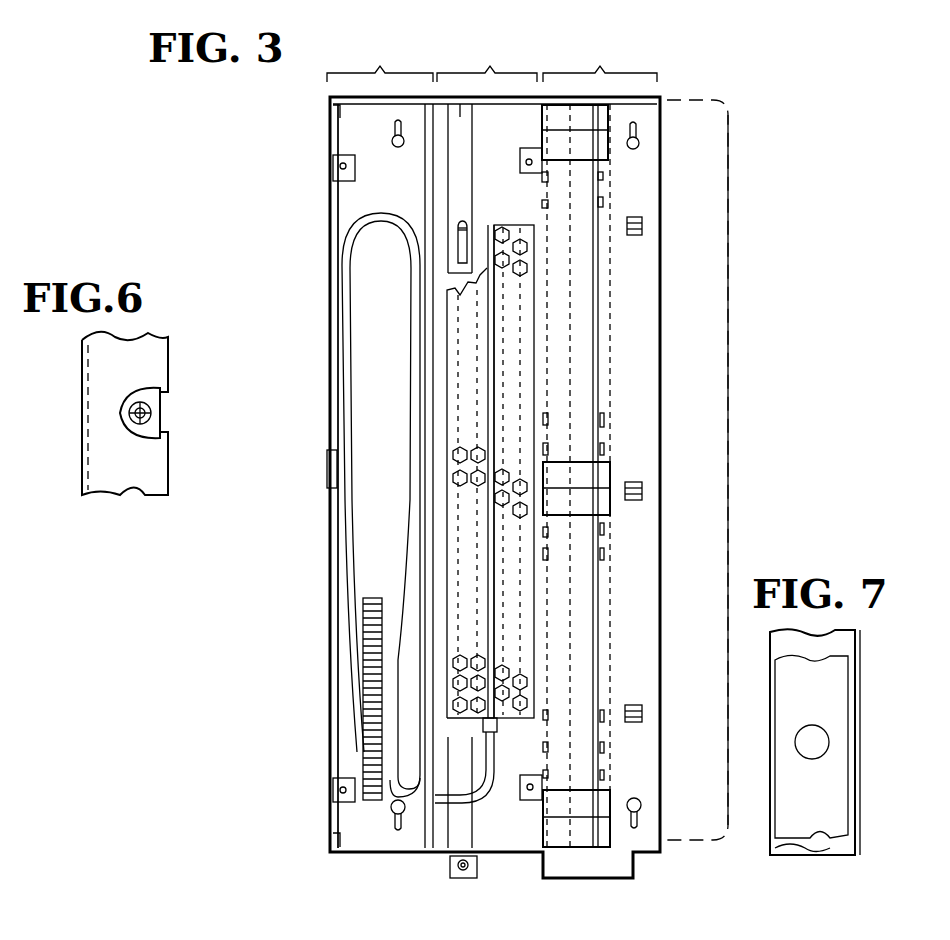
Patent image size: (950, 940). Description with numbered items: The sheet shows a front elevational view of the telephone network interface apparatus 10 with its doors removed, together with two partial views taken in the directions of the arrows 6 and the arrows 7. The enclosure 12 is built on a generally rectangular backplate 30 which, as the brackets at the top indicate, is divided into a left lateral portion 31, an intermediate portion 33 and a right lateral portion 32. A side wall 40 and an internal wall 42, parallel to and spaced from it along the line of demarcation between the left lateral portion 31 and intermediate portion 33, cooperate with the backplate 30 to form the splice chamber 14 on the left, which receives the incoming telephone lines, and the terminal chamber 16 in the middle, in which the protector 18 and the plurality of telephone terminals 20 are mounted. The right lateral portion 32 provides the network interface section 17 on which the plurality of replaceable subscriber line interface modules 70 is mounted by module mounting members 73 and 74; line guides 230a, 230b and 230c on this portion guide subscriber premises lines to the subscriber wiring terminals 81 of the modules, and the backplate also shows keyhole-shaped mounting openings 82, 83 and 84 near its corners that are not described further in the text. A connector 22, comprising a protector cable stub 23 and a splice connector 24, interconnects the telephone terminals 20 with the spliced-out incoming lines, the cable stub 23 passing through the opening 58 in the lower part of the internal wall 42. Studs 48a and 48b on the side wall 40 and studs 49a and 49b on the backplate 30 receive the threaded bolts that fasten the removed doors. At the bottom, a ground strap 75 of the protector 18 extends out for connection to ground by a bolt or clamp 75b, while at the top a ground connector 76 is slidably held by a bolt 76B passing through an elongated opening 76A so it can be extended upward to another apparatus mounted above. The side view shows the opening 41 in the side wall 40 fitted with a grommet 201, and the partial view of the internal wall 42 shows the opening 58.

In FIG. 3, the telephone network interface apparatus 10 is at (303, 113).
In FIG. 3, the enclosure 12 is at (665, 88).
In FIG. 3, the splice chamber 14 is at (410, 183).
In FIG. 3, the terminal chamber 16 is at (512, 133).
In FIG. 3, the network interface section 17 is at (575, 365).
In FIG. 3, the protector 18 is at (498, 225).
In FIG. 3, the telephone terminals 20 is at (527, 315).
In FIG. 3, the connector 22 is at (415, 805).
In FIG. 3, the protector cable stub 23 is at (403, 562).
In FIG. 3, the splice connector 24 is at (363, 693).
In FIG. 3, the backplate 30 is at (532, 822).
In FIG. 3, the left lateral portion 31 is at (380, 66).
In FIG. 3, the right lateral portion 32 is at (600, 62).
In FIG. 3, the intermediate portion 33 is at (487, 62).
In FIG. 3, the side wall 40 is at (327, 215).
In FIG. 6, the side wall 40 is at (82, 416).
In FIG. 6, the opening 41 is at (163, 402).
In FIG. 3, the internal wall 42 is at (430, 178).
In FIG. 7, the internal wall 42 is at (835, 675).
In FIG. 3, the stud 48a is at (333, 167).
In FIG. 3, the stud 48b is at (333, 790).
In FIG. 3, the stud 49a is at (540, 153).
In FIG. 3, the stud 49b is at (542, 787).
In FIG. 7, the opening 58 is at (825, 745).
In FIG. 3, the subscriber line interface modules 70 is at (735, 478).
In FIG. 3, the module mounting member 73 is at (545, 712).
In FIG. 3, the module mounting member 74 is at (600, 715).
In FIG. 3, the bottom ground strap 75 is at (480, 828).
In FIG. 3, the bolt/clamp 75b is at (465, 873).
In FIG. 3, the top ground connector 76 is at (460, 117).
In FIG. 3, the elongated opening 76A is at (467, 235).
In FIG. 3, the bolt 76B is at (460, 220).
In FIG. 3, the subscriber wiring terminals 81 is at (392, 140).
In FIG. 3, the keyhole 82 is at (398, 814).
In FIG. 3, the keyhole 83 is at (641, 808).
In FIG. 3, the keyhole 84 is at (640, 140).
In FIG. 6, the grommet 201 is at (163, 418).
In FIG. 3, the subscriber premises line guide 230a is at (642, 222).
In FIG. 3, the subscriber premises line guide 230b is at (642, 498).
In FIG. 3, the subscriber premises line guide 230c is at (642, 718).
In FIG. 3, the section arrows 6— 6 is at (275, 350).
In FIG. 3, the section arrows 7— 7 is at (447, 770).